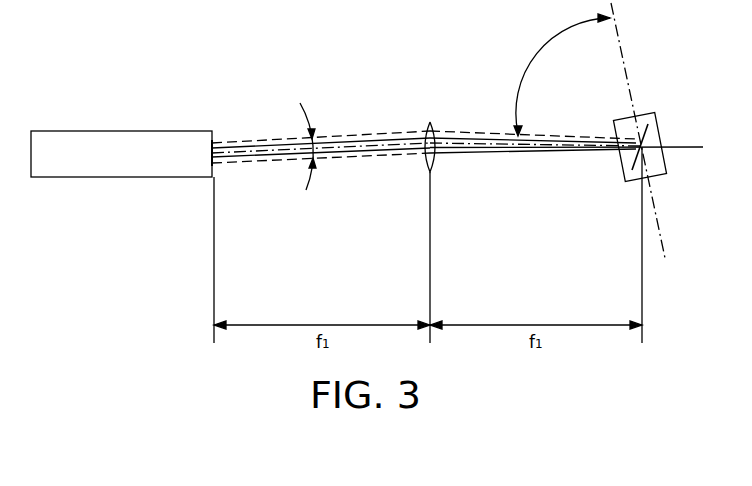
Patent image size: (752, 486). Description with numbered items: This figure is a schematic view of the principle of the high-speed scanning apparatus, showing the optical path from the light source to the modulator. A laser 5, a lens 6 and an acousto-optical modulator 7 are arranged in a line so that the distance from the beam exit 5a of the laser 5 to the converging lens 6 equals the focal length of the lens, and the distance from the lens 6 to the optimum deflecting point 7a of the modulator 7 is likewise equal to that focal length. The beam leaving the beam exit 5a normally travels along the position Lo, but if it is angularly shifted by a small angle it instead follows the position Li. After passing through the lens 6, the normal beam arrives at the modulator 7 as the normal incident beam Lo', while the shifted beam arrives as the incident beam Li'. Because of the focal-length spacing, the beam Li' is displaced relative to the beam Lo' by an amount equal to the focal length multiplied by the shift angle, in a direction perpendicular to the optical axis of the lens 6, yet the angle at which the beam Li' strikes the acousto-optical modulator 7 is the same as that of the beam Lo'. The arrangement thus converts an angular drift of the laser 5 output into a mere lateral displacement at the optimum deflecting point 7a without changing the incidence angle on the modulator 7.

The laser 5 is at (110, 170).
The beam exit 5a is at (213, 142).
The lens 6 is at (425, 168).
The acousto-optical modulator 7 is at (627, 172).
The optimum deflecting point 7a is at (640, 147).
The shifted beam position Li is at (321, 119).
The normal beam position Lo is at (321, 175).
The incident beam resulting from shifted beam Li' is at (533, 114).
The normal incident beam Lo' is at (533, 174).